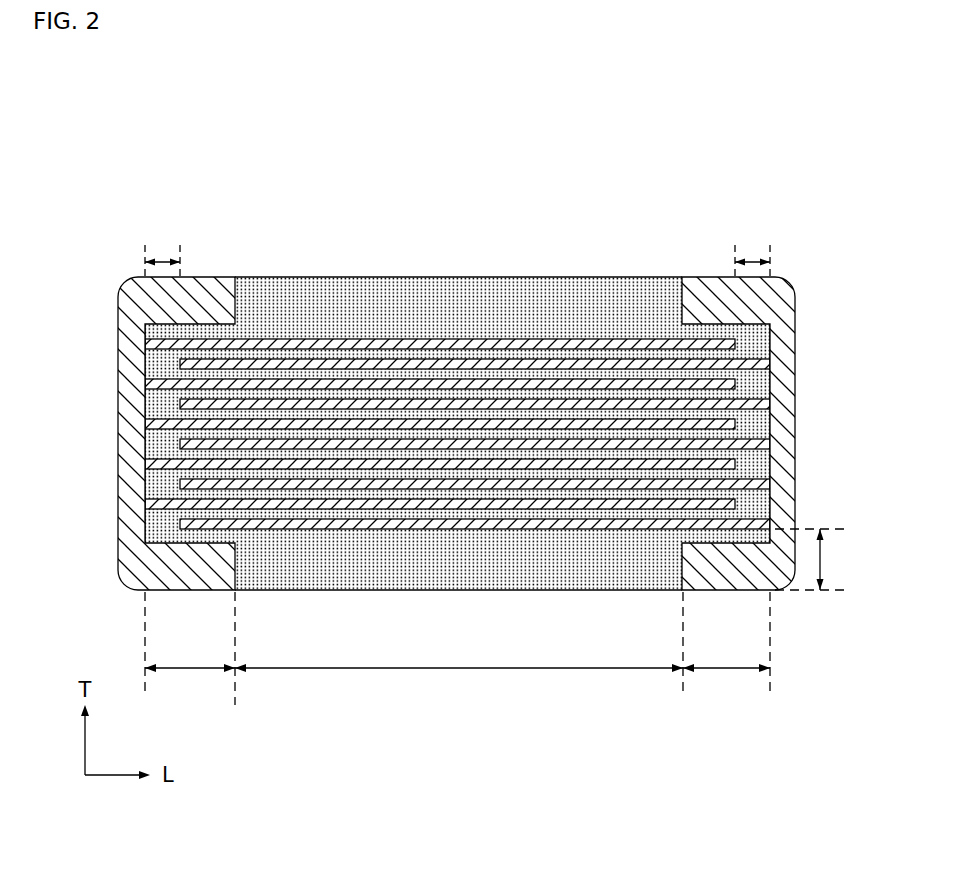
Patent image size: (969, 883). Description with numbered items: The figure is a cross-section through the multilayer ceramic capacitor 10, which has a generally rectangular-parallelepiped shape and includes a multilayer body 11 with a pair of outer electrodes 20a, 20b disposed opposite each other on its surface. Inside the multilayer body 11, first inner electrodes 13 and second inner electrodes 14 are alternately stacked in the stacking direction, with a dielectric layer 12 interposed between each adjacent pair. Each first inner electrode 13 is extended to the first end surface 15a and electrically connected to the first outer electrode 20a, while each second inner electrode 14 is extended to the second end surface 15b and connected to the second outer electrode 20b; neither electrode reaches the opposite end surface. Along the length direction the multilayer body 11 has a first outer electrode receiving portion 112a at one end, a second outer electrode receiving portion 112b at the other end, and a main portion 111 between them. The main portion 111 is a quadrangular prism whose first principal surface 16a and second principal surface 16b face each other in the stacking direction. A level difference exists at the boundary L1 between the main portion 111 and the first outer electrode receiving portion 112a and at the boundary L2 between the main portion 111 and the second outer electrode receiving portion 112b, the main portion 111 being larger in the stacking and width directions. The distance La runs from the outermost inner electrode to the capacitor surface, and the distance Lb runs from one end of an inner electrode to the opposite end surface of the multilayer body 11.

The multilayer ceramic capacitor 10 is at (462, 386).
The multilayer body 11 is at (462, 407).
The dielectric layer 12 is at (455, 355).
The first inner electrode 13 is at (350, 382).
The second inner electrode 14 is at (383, 488).
The first end surface 15a is at (145, 402).
The second end surface 15b is at (770, 425).
The first principal surface 16a is at (527, 277).
The second principal surface 16b is at (500, 591).
The first outer electrode 20a is at (118, 286).
The second outer electrode 20b is at (795, 288).
The main portion 111 is at (459, 684).
The first outer electrode receiving portion 112a is at (190, 648).
The second outer electrode receiving portion 112b is at (726, 648).
The boundary L1 is at (234, 268).
The boundary L2 is at (682, 268).
The distance La is at (815, 559).
The distance Lb is at (457, 248).